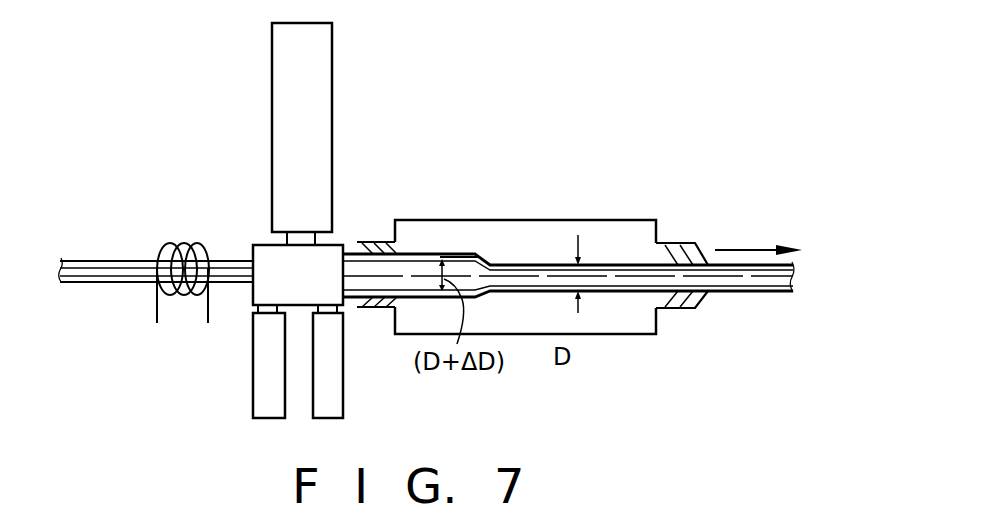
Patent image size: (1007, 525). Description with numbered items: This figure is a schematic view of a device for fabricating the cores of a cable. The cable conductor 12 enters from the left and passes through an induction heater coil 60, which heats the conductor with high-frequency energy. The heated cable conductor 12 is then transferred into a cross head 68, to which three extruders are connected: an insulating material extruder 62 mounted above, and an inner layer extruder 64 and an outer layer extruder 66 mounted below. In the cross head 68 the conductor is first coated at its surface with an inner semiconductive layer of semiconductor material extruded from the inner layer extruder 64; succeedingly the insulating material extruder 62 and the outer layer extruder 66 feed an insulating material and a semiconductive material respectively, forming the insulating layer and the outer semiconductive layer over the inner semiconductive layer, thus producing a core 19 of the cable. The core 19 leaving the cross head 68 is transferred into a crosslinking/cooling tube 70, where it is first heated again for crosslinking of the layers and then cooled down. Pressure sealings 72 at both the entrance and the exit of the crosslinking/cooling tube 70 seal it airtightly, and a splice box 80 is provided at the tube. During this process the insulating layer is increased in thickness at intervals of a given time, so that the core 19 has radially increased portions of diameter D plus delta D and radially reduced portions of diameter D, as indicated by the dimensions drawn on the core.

The cable conductor 12 is at (96, 264).
The cable core 19 is at (623, 283).
The induction heater coil 60 is at (185, 243).
The insulating material extruder 62 is at (324, 130).
The inner layer extruder 64 is at (256, 381).
The outer layer extruder 66 is at (343, 390).
The cross head 68 is at (343, 243).
The crosslinking/cooling tube 70 is at (524, 220).
The pressure sealings 72 is at (383, 240).
The splice box 80 is at (434, 253).